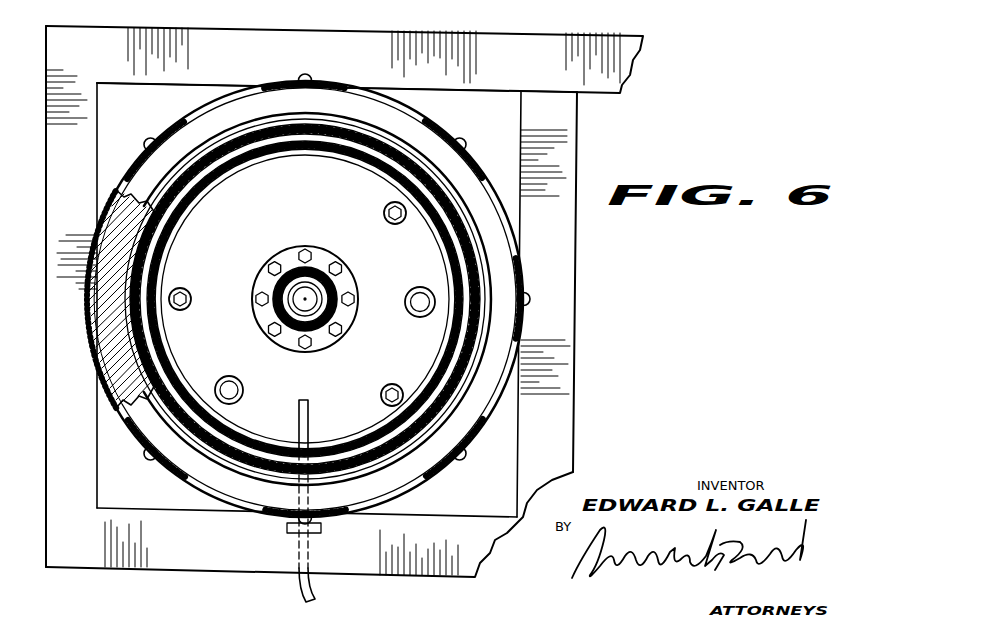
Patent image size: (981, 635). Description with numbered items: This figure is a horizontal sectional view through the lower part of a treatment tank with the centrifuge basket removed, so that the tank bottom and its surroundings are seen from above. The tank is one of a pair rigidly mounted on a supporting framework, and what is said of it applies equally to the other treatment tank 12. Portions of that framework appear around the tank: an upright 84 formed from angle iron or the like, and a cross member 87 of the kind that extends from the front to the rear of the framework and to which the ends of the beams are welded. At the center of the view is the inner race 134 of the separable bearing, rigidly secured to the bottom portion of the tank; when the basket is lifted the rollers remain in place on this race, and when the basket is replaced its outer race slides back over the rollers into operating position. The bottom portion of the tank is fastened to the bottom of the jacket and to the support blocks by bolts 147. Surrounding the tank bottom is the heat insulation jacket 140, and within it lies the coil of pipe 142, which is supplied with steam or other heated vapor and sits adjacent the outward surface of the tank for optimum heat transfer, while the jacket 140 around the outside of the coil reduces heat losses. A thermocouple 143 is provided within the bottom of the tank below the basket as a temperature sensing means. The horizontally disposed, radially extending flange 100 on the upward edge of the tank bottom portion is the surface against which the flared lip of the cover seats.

The treatment tank 12 is at (460, 358).
The upright 84 is at (180, 70).
The cross member 87 is at (46, 330).
The flange 100 is at (413, 478).
The inner race 134 is at (303, 315).
The heat insulation jacket 140 is at (120, 348).
The coil of pipe 142 is at (137, 250).
The thermocouple 143 is at (298, 433).
The bolts 147 is at (191, 299).